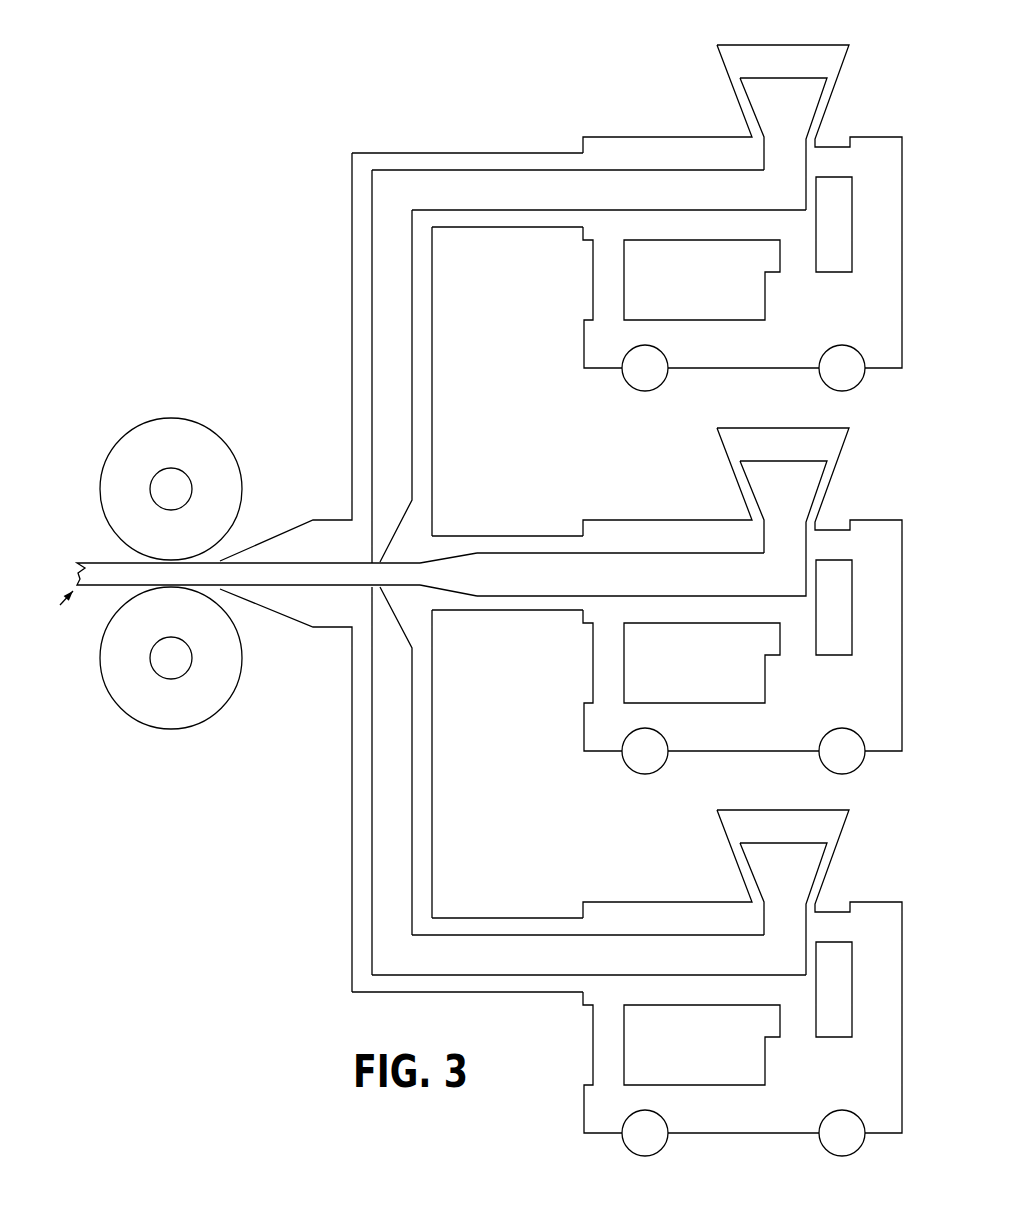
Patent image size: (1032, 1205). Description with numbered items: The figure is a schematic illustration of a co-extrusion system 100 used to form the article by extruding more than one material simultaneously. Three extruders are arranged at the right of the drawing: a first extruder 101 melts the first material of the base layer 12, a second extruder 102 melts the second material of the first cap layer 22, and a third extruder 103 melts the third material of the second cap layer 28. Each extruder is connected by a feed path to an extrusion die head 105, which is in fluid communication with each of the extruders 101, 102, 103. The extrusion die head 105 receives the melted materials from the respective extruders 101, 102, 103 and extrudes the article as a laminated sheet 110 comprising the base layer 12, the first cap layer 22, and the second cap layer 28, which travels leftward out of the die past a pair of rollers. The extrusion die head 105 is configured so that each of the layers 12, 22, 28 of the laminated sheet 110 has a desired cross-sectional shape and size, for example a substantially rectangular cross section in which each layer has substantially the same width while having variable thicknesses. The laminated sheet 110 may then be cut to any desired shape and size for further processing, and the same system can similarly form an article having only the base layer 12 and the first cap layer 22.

The co-extrusion system 100 is at (262, 152).
The first extruder 101 is at (862, 470).
The second extruder 102 is at (868, 87).
The third extruder 103 is at (858, 853).
The extrusion die head 105 is at (305, 510).
The base layer 12 is at (100, 574).
The first cap layer 22 is at (110, 558).
The second cap layer 28 is at (110, 588).
The laminated sheet 110 is at (44, 618).